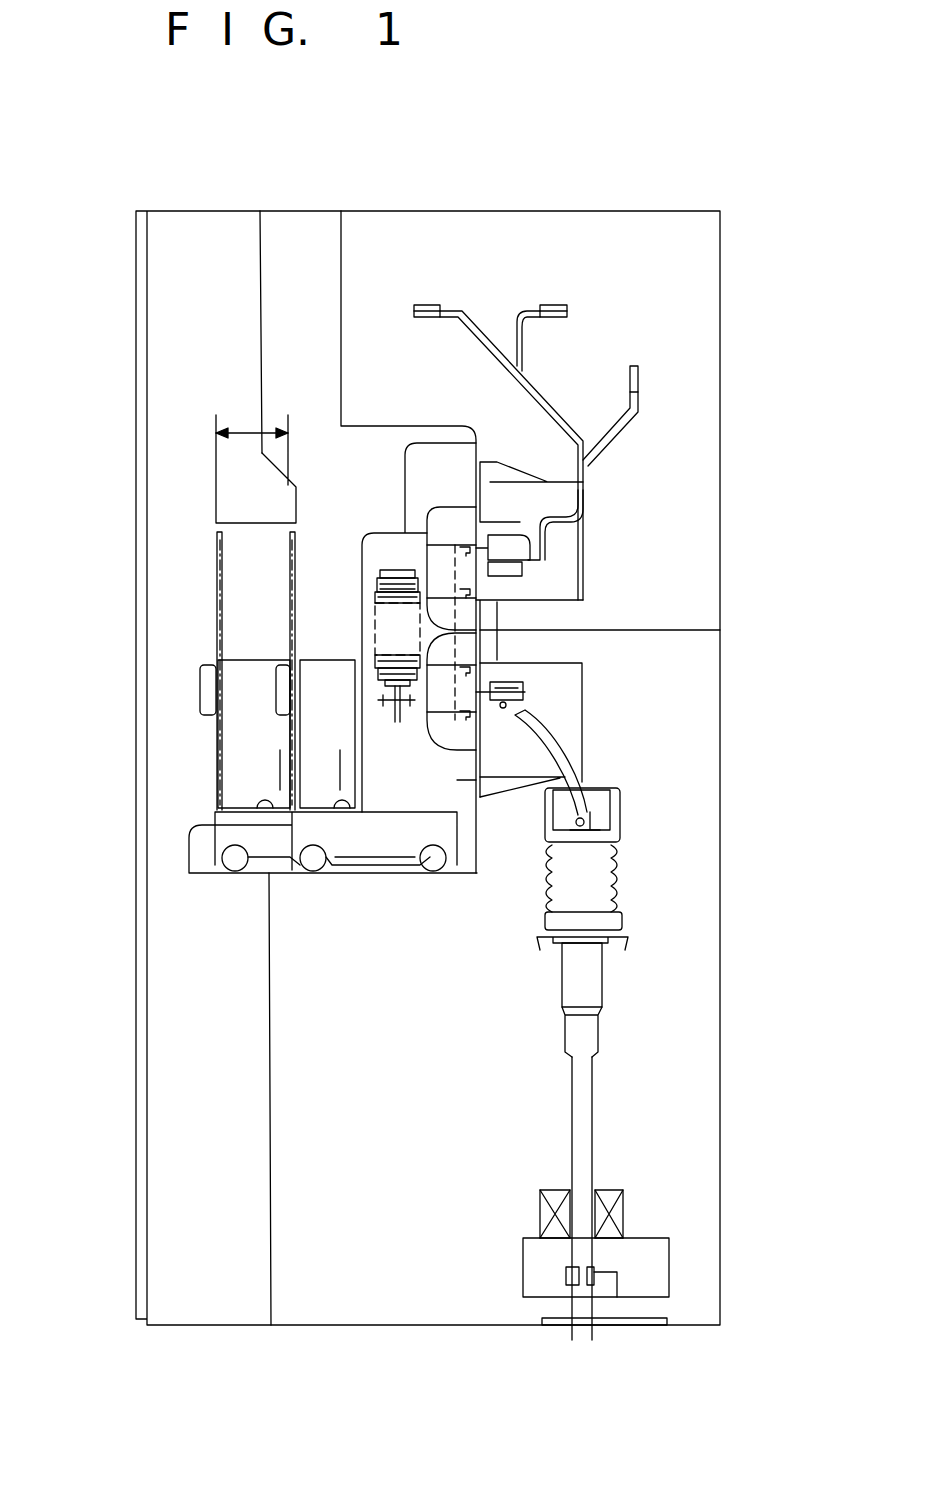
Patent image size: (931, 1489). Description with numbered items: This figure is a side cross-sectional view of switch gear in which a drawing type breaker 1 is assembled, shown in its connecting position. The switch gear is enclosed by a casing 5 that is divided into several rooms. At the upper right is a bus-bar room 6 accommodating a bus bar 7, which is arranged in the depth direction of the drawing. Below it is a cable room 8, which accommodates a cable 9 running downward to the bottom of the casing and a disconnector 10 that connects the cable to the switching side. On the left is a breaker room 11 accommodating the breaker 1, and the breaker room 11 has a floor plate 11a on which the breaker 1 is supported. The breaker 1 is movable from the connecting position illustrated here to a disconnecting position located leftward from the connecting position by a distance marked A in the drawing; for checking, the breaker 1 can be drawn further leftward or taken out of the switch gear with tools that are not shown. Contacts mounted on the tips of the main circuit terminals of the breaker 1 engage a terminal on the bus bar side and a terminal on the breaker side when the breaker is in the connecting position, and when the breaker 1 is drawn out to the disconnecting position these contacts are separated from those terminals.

The breaker 1 is at (290, 625).
The casing 5 is at (722, 455).
The bus-bar room 6 is at (675, 283).
The bus bar 7 is at (430, 302).
The cable room 8 is at (678, 1013).
The cable 9 is at (595, 1100).
The disconnector 10 is at (565, 740).
The breaker room 11 is at (323, 576).
The floor plate 11a is at (350, 875).